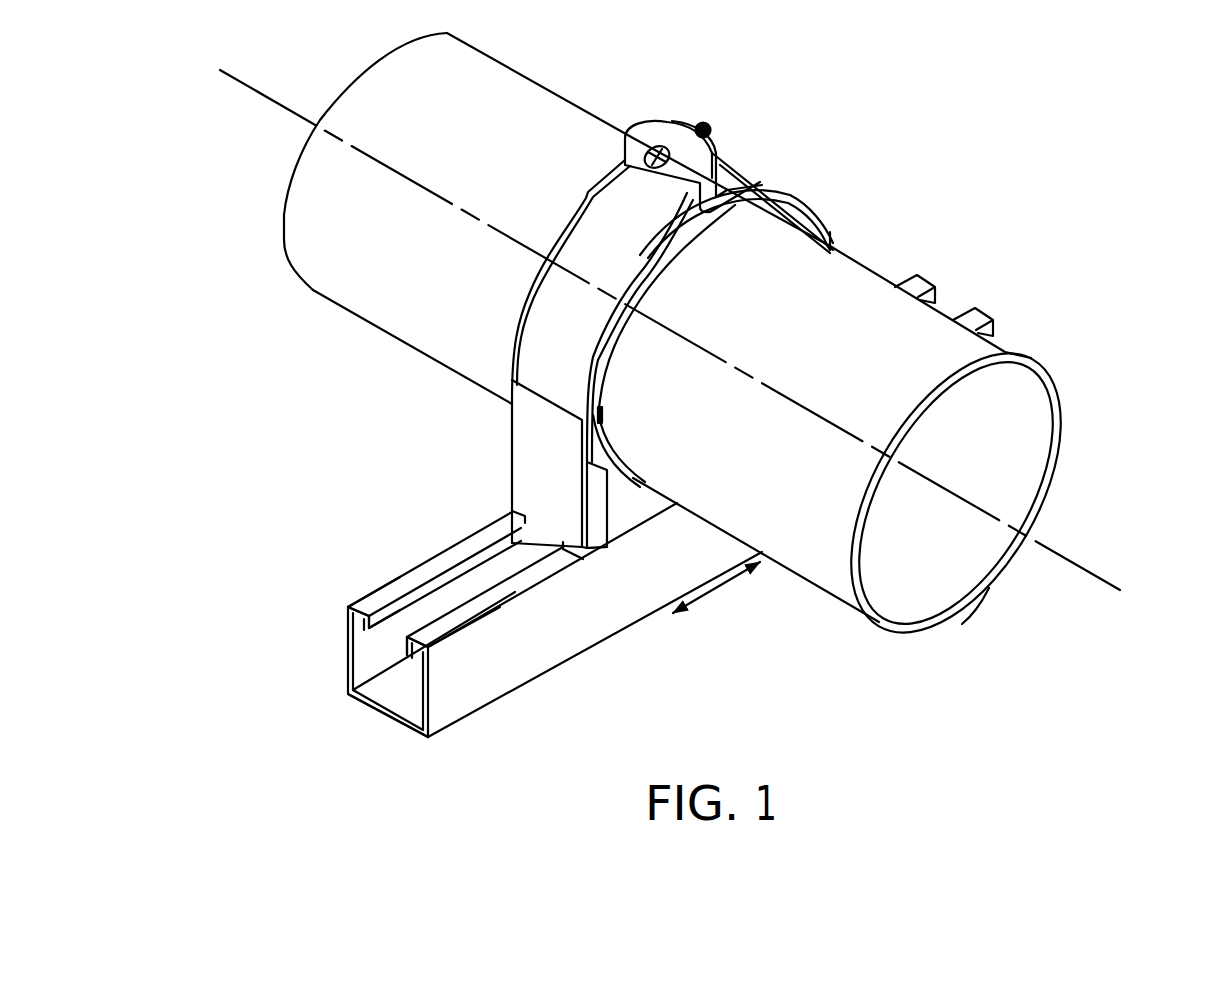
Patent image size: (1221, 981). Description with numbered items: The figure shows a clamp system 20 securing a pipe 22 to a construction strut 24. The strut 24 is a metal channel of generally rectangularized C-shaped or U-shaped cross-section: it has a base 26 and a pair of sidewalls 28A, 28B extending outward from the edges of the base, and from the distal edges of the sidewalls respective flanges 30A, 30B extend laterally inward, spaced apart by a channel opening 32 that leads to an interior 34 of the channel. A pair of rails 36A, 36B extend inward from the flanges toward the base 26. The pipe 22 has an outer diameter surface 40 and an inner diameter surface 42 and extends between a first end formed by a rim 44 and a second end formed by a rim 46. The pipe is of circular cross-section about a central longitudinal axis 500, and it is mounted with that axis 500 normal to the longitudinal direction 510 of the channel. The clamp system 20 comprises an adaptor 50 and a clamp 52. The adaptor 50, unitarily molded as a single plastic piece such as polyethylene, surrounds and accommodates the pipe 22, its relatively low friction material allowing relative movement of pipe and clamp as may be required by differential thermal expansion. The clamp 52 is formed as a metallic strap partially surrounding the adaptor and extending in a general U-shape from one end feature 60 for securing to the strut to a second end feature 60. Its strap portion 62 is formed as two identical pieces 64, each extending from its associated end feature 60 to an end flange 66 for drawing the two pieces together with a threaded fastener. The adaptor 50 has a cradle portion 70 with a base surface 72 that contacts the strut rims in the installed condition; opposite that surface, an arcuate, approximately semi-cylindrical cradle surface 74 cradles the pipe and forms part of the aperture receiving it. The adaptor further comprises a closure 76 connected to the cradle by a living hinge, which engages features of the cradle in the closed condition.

The clamp system 20 is at (645, 319).
The pipe 22 is at (913, 346).
The construction strut 24 is at (594, 600).
The base 26 is at (535, 653).
The sidewall 28A is at (460, 692).
The sidewall 28B is at (366, 648).
The flange 30A is at (490, 607).
The flange 30B is at (376, 594).
The channel opening 32 is at (497, 577).
The interior 34 is at (407, 688).
The rail 36A is at (405, 645).
The rail 36B is at (367, 647).
The outer diameter surface 40 is at (997, 356).
The inner diameter surface 42 is at (1018, 400).
The rim 44 is at (987, 585).
The rim 46 is at (289, 188).
The adaptor 50 is at (831, 226).
The clamp 52 is at (731, 155).
The end feature 60 is at (533, 549).
The strap portion 62 is at (545, 364).
The strap piece 64 is at (758, 166).
The end flange 66 is at (679, 178).
The cradle portion 70 is at (620, 503).
The base surface 72 is at (612, 536).
The arcuate cradle surface 74 is at (643, 483).
The closure 76 is at (610, 369).
The central longitudinal axis 500 is at (970, 500).
The longitudinal direction 510 is at (712, 597).